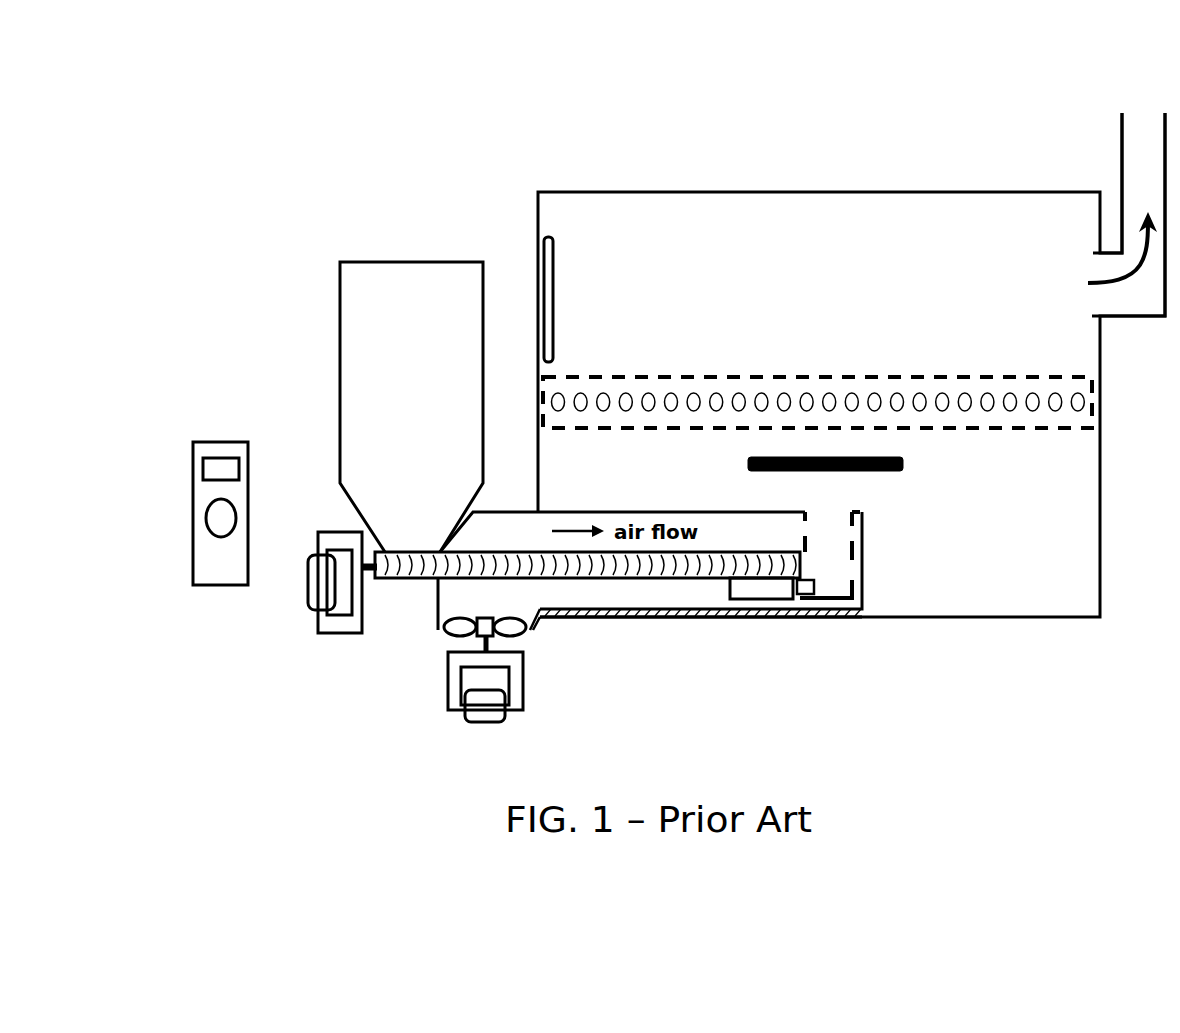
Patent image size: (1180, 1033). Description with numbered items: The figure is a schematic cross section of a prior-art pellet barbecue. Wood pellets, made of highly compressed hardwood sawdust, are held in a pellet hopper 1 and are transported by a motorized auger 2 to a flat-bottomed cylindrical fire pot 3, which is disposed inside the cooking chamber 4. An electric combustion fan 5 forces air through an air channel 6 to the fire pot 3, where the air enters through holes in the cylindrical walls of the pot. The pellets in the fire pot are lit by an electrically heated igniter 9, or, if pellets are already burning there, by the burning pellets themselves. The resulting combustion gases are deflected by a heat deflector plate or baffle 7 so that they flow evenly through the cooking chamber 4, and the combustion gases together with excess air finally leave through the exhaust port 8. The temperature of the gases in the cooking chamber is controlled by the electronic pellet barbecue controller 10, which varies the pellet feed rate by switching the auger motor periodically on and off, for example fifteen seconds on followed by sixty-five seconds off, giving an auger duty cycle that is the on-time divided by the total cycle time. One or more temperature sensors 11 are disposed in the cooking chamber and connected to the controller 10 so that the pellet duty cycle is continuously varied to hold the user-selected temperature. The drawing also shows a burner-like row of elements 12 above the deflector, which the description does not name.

The pellet hopper 1 is at (341, 287).
The motorized auger 2 is at (421, 532).
The fire pot 3 is at (839, 556).
The cooking chamber 4 is at (1014, 536).
The electric combustion fan 5 is at (538, 662).
The air channel 6 is at (660, 607).
The heat deflector plate 7 is at (748, 462).
The exhaust port 8 is at (1156, 318).
The igniter 9 is at (783, 600).
The pellet barbecue controller 10 is at (193, 488).
The temperature sensor 11 is at (553, 288).
The burner array 12 is at (757, 377).